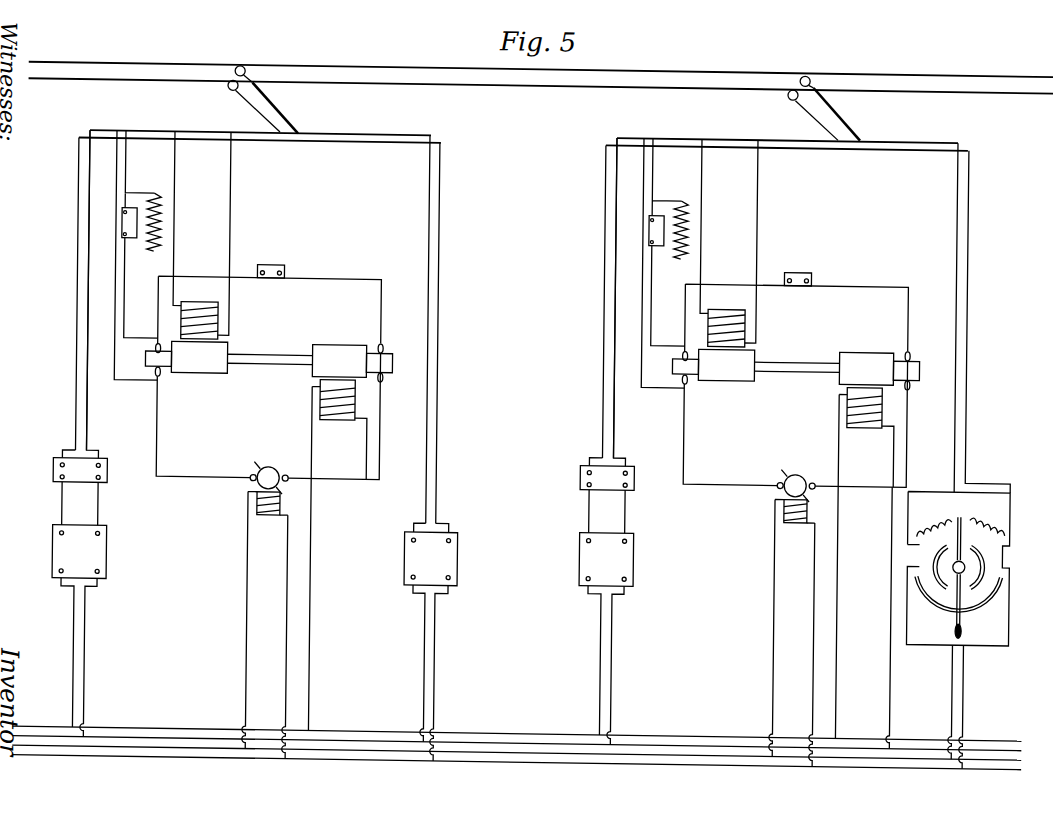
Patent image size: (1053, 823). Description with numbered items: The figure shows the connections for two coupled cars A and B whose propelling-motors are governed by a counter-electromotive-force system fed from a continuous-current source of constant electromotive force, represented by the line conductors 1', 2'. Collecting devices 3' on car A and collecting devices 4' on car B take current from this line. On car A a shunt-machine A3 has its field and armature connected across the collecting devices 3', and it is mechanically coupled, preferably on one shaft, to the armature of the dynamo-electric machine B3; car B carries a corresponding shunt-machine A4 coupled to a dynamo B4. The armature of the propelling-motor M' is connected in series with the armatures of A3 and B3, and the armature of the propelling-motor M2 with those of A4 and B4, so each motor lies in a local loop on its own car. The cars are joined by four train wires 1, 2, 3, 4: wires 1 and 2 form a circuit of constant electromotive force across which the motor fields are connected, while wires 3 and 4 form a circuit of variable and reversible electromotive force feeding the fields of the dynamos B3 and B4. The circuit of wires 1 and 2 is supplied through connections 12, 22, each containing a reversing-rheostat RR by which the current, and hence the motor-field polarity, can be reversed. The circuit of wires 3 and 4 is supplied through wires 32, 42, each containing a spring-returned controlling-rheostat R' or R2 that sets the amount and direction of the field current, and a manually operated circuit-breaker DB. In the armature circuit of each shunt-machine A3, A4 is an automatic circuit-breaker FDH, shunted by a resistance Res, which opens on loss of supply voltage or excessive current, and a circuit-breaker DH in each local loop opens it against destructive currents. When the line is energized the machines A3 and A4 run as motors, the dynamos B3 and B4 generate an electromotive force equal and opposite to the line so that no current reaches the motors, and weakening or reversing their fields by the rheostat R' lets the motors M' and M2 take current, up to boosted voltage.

The line-circuit conductor 1' is at (540, 98).
The line-circuit conductor 2' is at (541, 58).
The collecting devices 3' is at (260, 88).
The collecting devices 4' is at (818, 96).
The supply connection 12 is at (430, 254).
The supply connection 22 is at (444, 253).
The supply wire 32 is at (79, 420).
The supply wire 42 is at (91, 420).
The train wire 1 is at (516, 774).
The train wire 2 is at (516, 768).
The train wire 3 is at (516, 764).
The train wire 4 is at (517, 759).
The resistance Res is at (166, 221).
The automatic circuit-breaker FDH is at (128, 224).
The circuit-breaker DH is at (532, 281).
The circuit-breaker DB is at (587, 462).
The controlling-rheostat R' is at (106, 552).
The controlling-rheostat R2 is at (570, 551).
The reversing-rheostat RR is at (985, 597).
The propelling-motor M' is at (269, 482).
The propelling-motor M2 is at (796, 486).
The shunt-machine A3 is at (186, 349).
The dynamo-electric machine B3 is at (352, 371).
The shunt-machine A4 is at (713, 356).
The dynamo-electric machine B4 is at (879, 377).
The car A is at (256, 778).
The car B is at (791, 782).